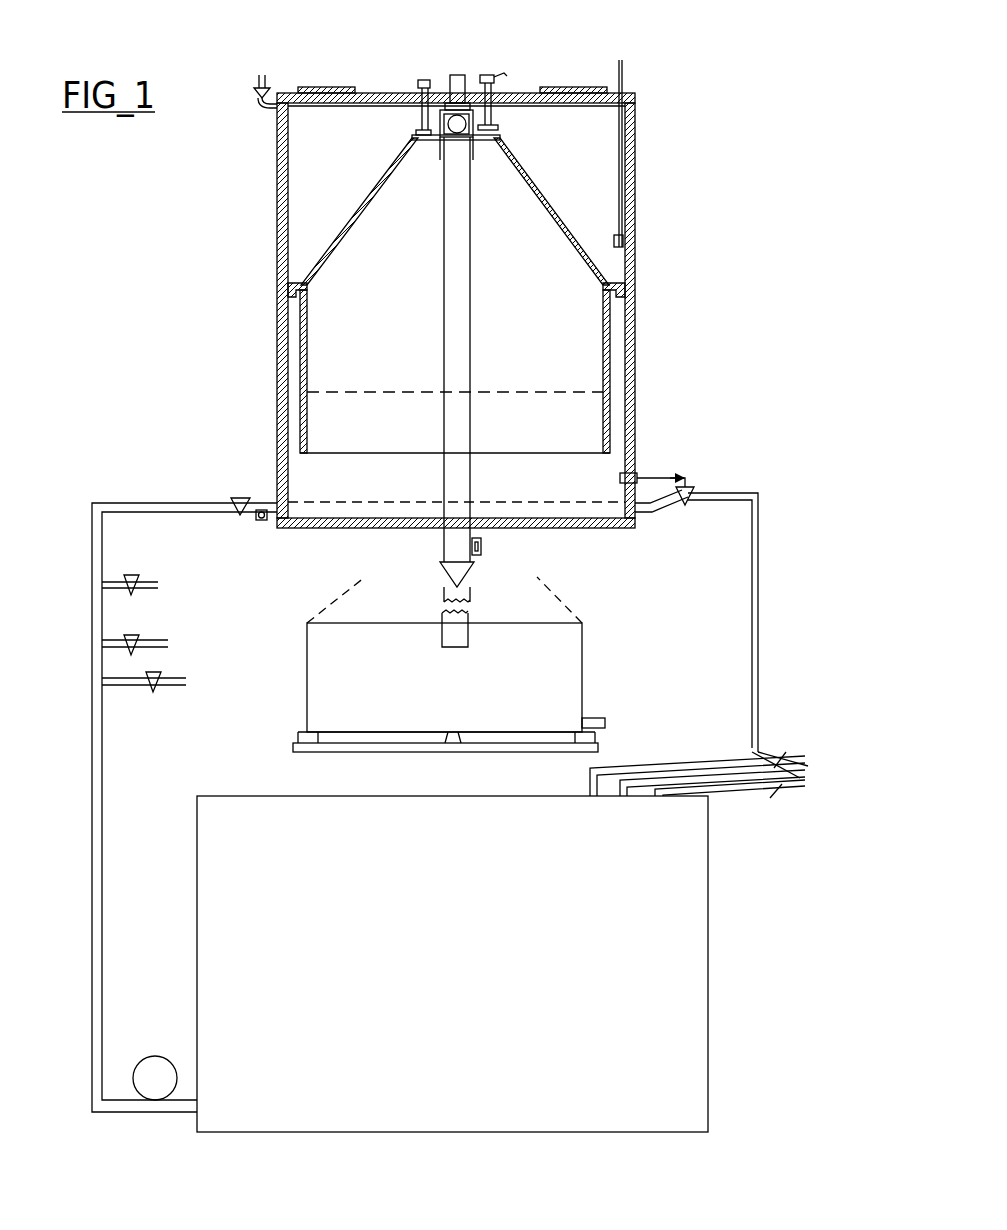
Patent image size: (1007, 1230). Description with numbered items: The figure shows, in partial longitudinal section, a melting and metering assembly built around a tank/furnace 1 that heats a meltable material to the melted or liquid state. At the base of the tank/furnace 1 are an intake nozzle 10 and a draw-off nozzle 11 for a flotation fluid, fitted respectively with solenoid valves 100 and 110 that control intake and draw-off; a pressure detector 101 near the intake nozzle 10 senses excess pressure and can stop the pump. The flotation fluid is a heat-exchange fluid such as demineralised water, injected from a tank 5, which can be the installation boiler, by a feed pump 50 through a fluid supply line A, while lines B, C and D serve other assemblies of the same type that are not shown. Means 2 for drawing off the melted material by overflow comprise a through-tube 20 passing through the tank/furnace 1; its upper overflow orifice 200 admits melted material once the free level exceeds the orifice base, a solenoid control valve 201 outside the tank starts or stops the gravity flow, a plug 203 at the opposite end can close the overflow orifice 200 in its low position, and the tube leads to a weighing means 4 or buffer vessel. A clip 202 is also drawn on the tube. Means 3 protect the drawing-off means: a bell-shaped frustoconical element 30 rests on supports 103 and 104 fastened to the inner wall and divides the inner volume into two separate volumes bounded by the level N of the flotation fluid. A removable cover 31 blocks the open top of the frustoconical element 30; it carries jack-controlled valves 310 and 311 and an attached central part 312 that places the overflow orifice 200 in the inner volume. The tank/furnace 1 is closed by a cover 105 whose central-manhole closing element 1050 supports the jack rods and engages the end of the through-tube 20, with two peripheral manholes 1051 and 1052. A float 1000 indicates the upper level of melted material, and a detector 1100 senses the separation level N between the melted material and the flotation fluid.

The tank/furnace 1 is at (272, 190).
The intake nozzle 10 is at (284, 493).
The solenoid valve 100 is at (238, 497).
The pressure detector 101 is at (261, 522).
The support 103 is at (284, 279).
The support 104 is at (633, 283).
The closing cover 105 is at (366, 93).
The closing element 1050 is at (396, 93).
The peripheral manhole 1051 is at (303, 87).
The peripheral manhole 1052 is at (585, 87).
The float 1000 is at (623, 86).
The detector 1100 is at (637, 475).
The solenoid valve 110 is at (694, 490).
The draw-off nozzle 11 is at (665, 505).
The means for drawing off by overflow 2 is at (474, 80).
The through-tube 20 is at (456, 312).
The overflow orifice 200 is at (451, 128).
The solenoid control valve 201 is at (467, 582).
The clip 202 is at (482, 548).
The plug 203 is at (455, 75).
The means for protecting 3 is at (540, 162).
The frustoconical element 30 is at (565, 222).
The removable cover 31 is at (504, 137).
The valve 310 is at (420, 108).
The valve 311 is at (496, 92).
The central part 312 is at (478, 140).
The weighing means 4 is at (566, 666).
The tank 5 is at (238, 820).
The feed pump 50 is at (160, 1068).
The fluid supply line A is at (178, 503).
The fluid supply line B is at (134, 578).
The fluid supply line C is at (136, 645).
The fluid supply line D is at (160, 688).
The separation level N is at (300, 392).